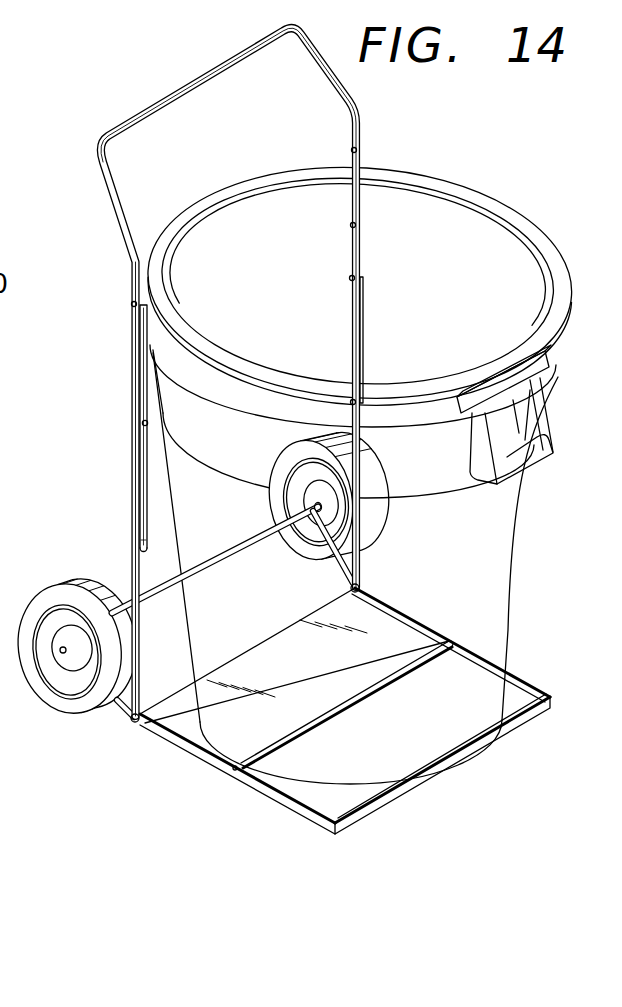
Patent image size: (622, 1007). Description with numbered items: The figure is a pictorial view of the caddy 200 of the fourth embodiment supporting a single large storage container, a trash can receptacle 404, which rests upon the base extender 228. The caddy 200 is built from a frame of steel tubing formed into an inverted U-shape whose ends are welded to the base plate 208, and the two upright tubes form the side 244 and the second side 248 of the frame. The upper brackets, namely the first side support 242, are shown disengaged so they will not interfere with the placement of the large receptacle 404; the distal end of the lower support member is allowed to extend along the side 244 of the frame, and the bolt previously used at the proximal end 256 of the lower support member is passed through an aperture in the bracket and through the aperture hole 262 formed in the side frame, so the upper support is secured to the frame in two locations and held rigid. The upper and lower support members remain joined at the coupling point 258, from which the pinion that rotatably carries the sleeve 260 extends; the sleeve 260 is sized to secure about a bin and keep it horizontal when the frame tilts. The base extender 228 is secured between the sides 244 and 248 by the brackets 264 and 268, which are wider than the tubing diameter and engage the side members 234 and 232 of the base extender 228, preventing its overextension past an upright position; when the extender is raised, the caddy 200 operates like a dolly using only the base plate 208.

The caddy 200 is at (130, 78).
The side of the frame 244 is at (133, 262).
The sleeve 260 is at (356, 227).
The second side of the frame 248 is at (361, 322).
The aperture hole 262 is at (133, 378).
The coupling point 258 is at (143, 423).
The first side support 242 is at (142, 440).
The proximal end of the lower support member 256 is at (143, 550).
The bracket 264 is at (126, 600).
The bracket 268 is at (383, 492).
The receptacle 404 is at (558, 343).
The side member of the base extender 232 is at (514, 673).
The base plate 208 is at (220, 713).
The side member of the base extender 234 is at (317, 823).
The base extender 228 is at (362, 836).